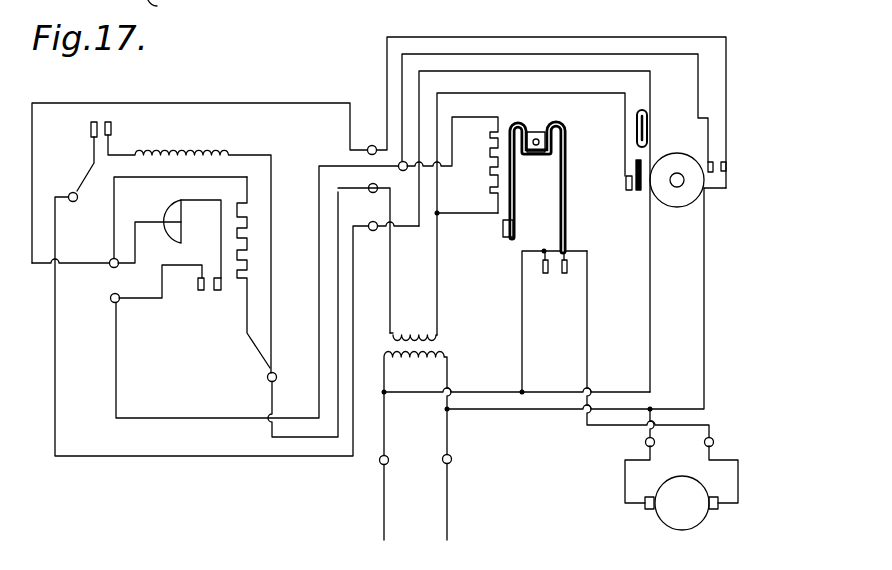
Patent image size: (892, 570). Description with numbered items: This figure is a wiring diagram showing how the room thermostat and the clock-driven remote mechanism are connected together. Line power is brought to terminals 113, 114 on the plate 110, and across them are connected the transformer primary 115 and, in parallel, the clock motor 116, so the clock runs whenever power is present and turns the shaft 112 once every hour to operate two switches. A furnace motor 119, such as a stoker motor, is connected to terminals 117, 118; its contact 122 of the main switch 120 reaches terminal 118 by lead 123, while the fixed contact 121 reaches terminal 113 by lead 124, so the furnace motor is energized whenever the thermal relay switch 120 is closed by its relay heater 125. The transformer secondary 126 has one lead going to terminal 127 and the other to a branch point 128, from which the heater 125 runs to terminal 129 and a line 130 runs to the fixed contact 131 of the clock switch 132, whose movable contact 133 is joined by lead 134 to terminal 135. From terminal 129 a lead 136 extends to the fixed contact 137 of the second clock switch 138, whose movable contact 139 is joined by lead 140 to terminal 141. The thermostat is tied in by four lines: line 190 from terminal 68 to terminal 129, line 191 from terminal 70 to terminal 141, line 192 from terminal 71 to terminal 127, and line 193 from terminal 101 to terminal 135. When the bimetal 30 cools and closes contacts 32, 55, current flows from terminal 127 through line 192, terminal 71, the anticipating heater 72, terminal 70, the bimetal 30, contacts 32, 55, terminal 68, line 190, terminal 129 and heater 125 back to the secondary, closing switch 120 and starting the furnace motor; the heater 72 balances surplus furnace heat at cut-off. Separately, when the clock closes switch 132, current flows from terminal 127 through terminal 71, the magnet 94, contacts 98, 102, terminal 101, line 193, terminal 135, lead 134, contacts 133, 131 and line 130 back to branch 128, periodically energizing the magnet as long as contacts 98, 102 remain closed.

The room thermostat bimetal 30 is at (163, 212).
The contact 32 is at (218, 291).
The contact 55 is at (201, 291).
The terminal 68 is at (112, 302).
The terminal 70 is at (110, 260).
The terminal 71 is at (267, 377).
The anticipating heater 72 is at (243, 210).
The magnet 94 is at (201, 149).
The contact 98 is at (112, 130).
The terminal 101 is at (73, 202).
The switch contact 102 is at (90, 130).
The plate 110 is at (166, 8).
The shaft 112 is at (680, 173).
The terminal 113 is at (381, 465).
The terminal 114 is at (452, 462).
The transformer primary 115 is at (445, 357).
The clock motor 116 is at (677, 207).
The terminal 117 is at (645, 443).
The terminal 118 is at (714, 442).
The furnace motor 119 is at (667, 520).
The main switch 120 is at (566, 138).
The fixed contact 121 is at (546, 274).
The contact 122 is at (562, 276).
The lead 123 is at (591, 329).
The lead 124 is at (521, 300).
The relay heater 125 is at (492, 163).
The transformer secondary 126 is at (407, 328).
The terminal 127 is at (374, 193).
The branch point 128 is at (438, 216).
The terminal 129 is at (405, 171).
The line 130 is at (522, 95).
The fixed contact 131 is at (630, 194).
The switch 132 is at (632, 195).
The movable contact 133 is at (636, 176).
The lead 134 is at (653, 90).
The terminal 135 is at (373, 231).
The lead 136 is at (401, 68).
The fixed contact 137 is at (714, 162).
The switch 138 is at (721, 193).
The movable contact 139 is at (727, 165).
The lead 140 is at (728, 36).
The terminal 141 is at (373, 145).
The line 190 is at (135, 419).
The line 191 is at (202, 103).
The line 192 is at (305, 438).
The line 193 is at (112, 457).